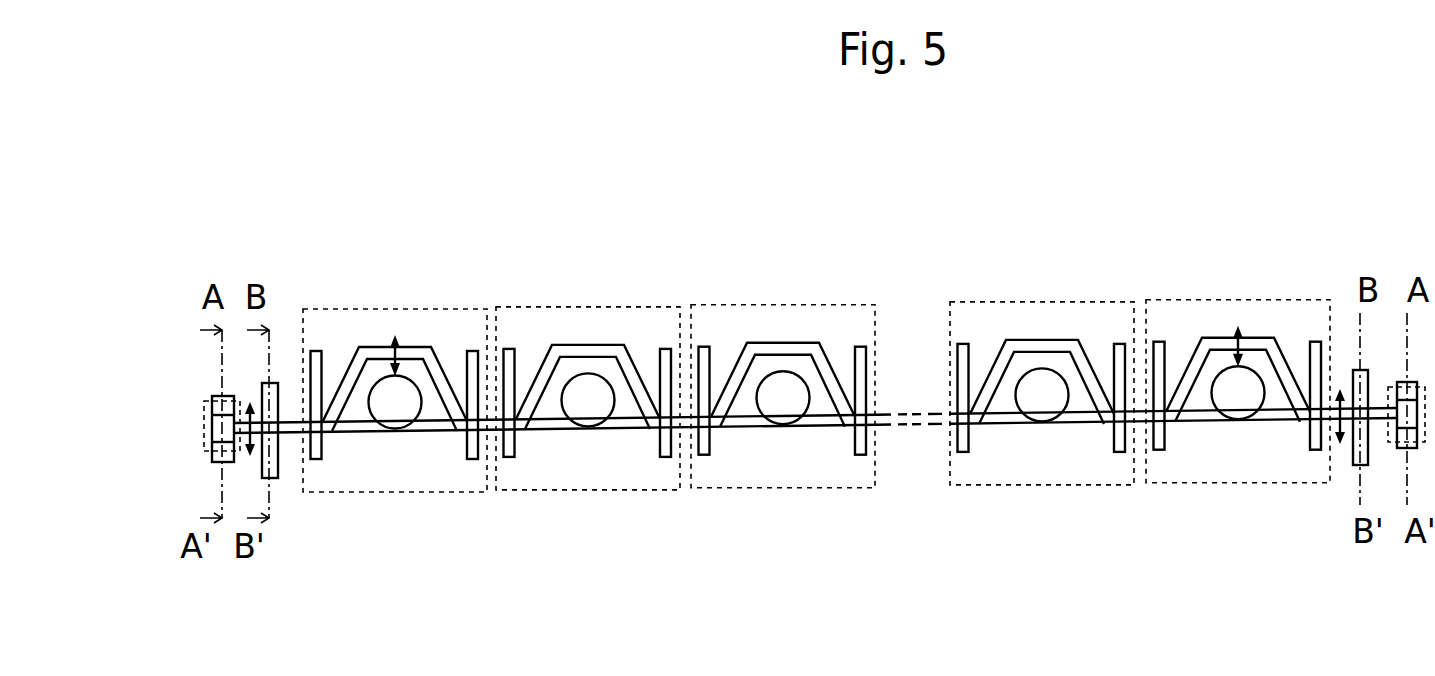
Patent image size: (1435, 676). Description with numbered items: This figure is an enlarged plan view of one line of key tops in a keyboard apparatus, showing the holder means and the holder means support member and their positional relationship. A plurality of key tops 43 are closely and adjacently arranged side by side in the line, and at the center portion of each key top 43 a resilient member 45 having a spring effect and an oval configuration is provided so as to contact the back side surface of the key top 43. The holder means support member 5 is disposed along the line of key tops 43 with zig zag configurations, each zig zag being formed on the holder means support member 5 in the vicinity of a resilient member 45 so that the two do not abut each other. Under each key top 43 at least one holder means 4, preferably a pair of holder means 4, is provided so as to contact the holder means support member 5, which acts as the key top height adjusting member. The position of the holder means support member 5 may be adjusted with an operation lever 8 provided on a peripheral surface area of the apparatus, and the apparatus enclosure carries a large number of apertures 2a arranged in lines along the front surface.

The aperture 2a is at (208, 403).
The operation lever 8 is at (213, 428).
The holder means 4 is at (816, 337).
The holder means support member 5 is at (815, 389).
The key top 43 is at (816, 346).
The resilient member 45 is at (817, 446).